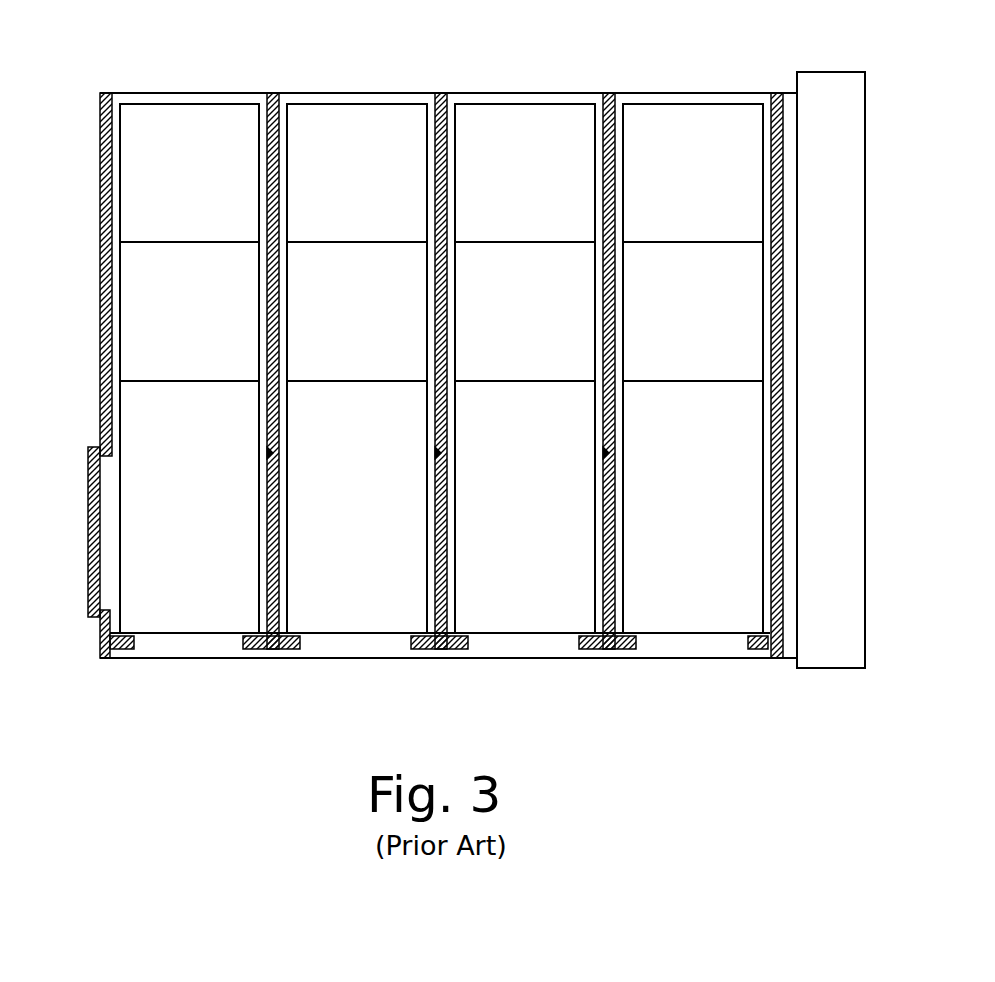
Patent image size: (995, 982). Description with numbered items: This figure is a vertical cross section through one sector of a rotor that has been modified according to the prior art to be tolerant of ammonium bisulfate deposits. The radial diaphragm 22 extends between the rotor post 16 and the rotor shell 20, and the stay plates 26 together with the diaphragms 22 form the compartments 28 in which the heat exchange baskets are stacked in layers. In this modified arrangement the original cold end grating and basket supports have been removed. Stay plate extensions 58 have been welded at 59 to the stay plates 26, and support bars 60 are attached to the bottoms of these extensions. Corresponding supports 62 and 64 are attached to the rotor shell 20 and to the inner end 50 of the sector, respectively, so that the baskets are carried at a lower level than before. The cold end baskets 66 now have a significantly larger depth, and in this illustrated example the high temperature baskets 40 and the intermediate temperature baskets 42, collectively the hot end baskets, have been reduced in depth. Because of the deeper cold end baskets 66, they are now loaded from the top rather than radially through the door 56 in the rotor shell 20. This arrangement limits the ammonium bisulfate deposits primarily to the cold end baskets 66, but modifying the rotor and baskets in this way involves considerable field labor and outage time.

The rotor post 16 is at (817, 662).
The rotor shell 20 is at (106, 93).
The radial diaphragm 22 is at (680, 100).
The stay plate 26 is at (273, 95).
The compartment 28 is at (362, 100).
The high temperature basket 40 is at (527, 128).
The intermediate temperature basket 42 is at (140, 345).
The inner end of the sector 50 is at (776, 93).
The door 56 is at (93, 480).
The stay plate extension 58 is at (270, 491).
The weld 59 is at (268, 452).
The support bar 60 is at (270, 650).
The support 62 is at (125, 648).
The support 64 is at (755, 650).
The cold end basket 66 is at (141, 562).